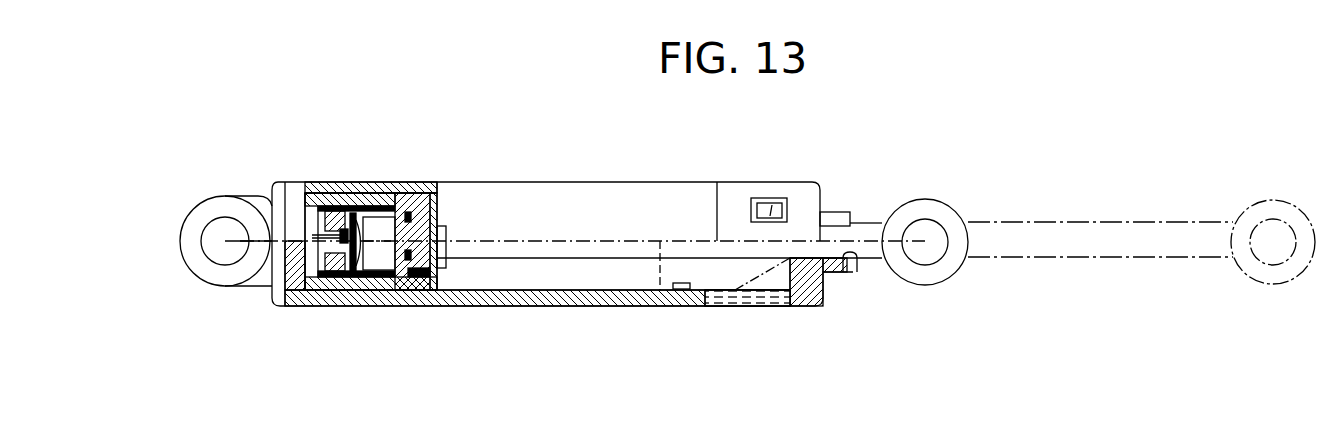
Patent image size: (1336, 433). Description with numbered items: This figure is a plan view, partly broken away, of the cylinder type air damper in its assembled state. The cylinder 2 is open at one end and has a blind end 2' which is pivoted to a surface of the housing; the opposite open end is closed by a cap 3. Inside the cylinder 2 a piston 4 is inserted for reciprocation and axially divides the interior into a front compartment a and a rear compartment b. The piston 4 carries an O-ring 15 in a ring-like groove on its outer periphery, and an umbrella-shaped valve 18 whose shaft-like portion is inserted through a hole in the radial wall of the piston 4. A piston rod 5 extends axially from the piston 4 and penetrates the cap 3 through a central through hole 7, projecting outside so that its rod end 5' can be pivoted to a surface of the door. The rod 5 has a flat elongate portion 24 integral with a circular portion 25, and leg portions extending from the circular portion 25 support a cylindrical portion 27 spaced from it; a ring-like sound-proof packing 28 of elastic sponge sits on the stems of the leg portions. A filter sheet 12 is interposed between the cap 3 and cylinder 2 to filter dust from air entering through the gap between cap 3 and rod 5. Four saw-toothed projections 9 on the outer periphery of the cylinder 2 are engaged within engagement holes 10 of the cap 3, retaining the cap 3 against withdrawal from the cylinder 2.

The cylinder 2 is at (582, 214).
The blind end of the cylinder 2' is at (209, 218).
The cap 3 is at (826, 292).
The piston 4 is at (353, 292).
The piston rod 5 is at (659, 290).
The rod end 5' is at (1098, 239).
The through hole 7 is at (860, 258).
The projections 9 is at (777, 205).
The engagement holes 10 is at (763, 198).
The filter sheet 12 is at (808, 307).
The O-ring 15 is at (327, 198).
The valve 18 is at (308, 230).
The flat elongate portion 24 is at (1076, 242).
The circular portion 25 is at (445, 267).
The cylindrical portion 27 is at (394, 193).
The sound-proof packing 28 is at (418, 292).
The front compartment a is at (298, 282).
The rear compartment b is at (525, 275).